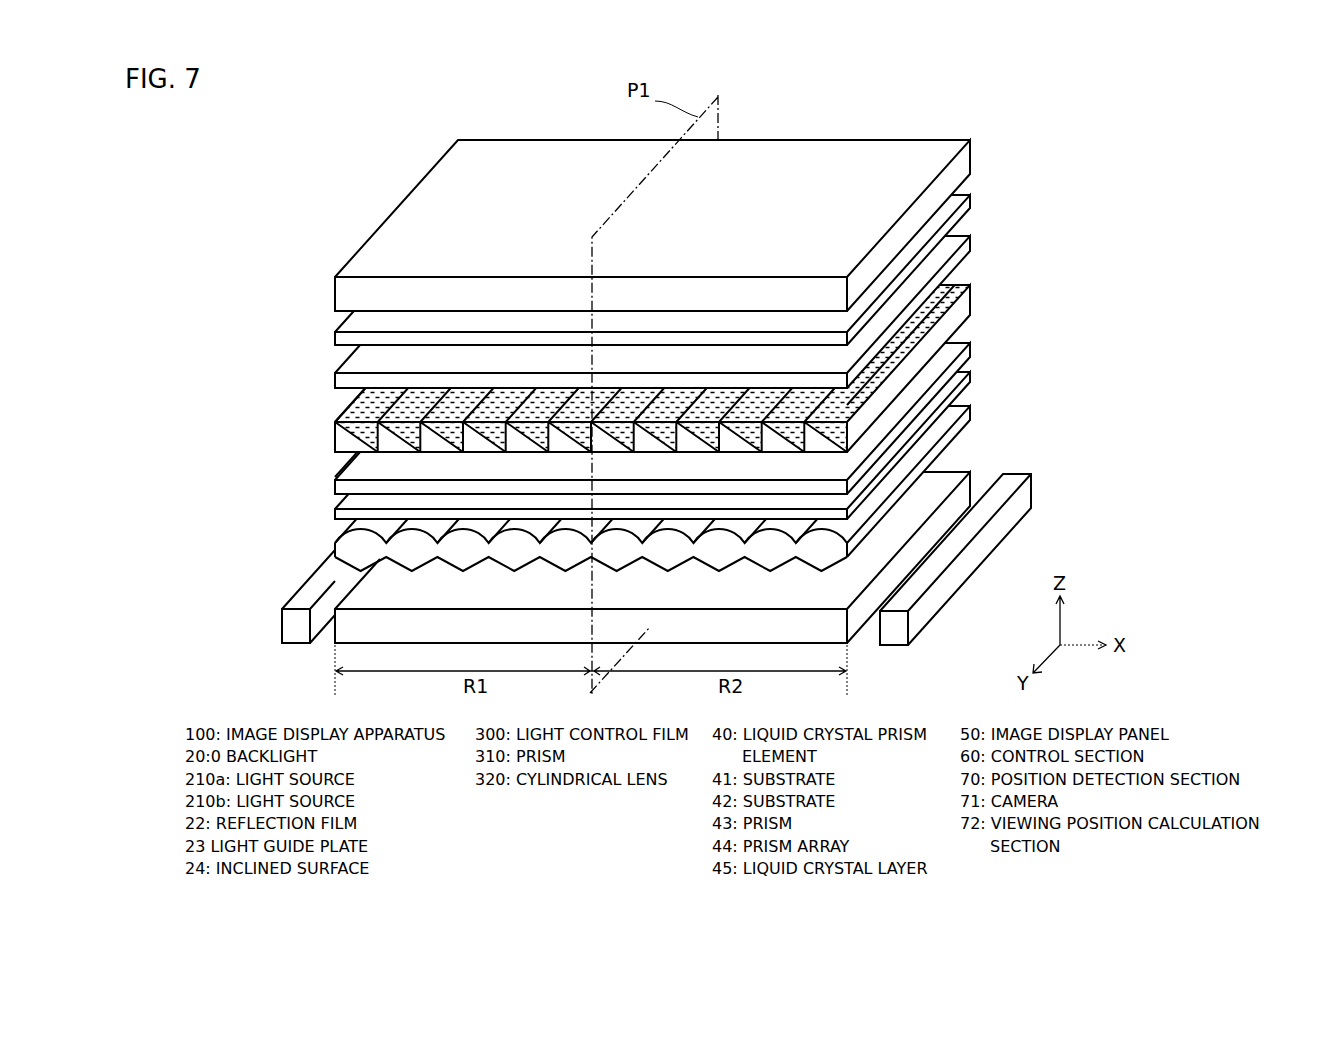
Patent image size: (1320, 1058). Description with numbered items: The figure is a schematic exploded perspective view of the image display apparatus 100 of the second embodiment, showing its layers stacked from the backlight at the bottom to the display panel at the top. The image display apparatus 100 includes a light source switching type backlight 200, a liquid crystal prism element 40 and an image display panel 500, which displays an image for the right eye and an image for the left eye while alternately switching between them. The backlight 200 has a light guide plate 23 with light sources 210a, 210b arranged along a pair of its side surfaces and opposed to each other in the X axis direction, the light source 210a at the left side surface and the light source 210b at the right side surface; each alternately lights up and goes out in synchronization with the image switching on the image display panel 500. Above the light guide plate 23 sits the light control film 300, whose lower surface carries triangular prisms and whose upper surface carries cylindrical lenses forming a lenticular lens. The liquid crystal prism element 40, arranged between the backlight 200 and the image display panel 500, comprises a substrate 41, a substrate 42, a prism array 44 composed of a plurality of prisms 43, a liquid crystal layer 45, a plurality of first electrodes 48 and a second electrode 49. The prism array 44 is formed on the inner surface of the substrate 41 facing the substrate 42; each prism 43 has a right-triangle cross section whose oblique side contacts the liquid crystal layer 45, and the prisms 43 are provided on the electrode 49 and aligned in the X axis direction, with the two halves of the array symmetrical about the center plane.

The image display apparatus 100 is at (1115, 160).
The image display panel 500 is at (970, 153).
The liquid crystal prism element 40 is at (1051, 250).
The substrate 41 is at (336, 372).
The substrate 42 is at (335, 489).
The prism 43 is at (335, 425).
The prism array 44 is at (549, 420).
The liquid crystal layer 45 is at (975, 300).
The first electrode 48 is at (346, 398).
The second electrode 49 is at (353, 472).
The light control film 300 is at (975, 407).
The light source switching type backlight 200 is at (1053, 482).
The light guide plate 23 is at (968, 473).
The light source 210a is at (291, 647).
The light source 210b is at (895, 648).